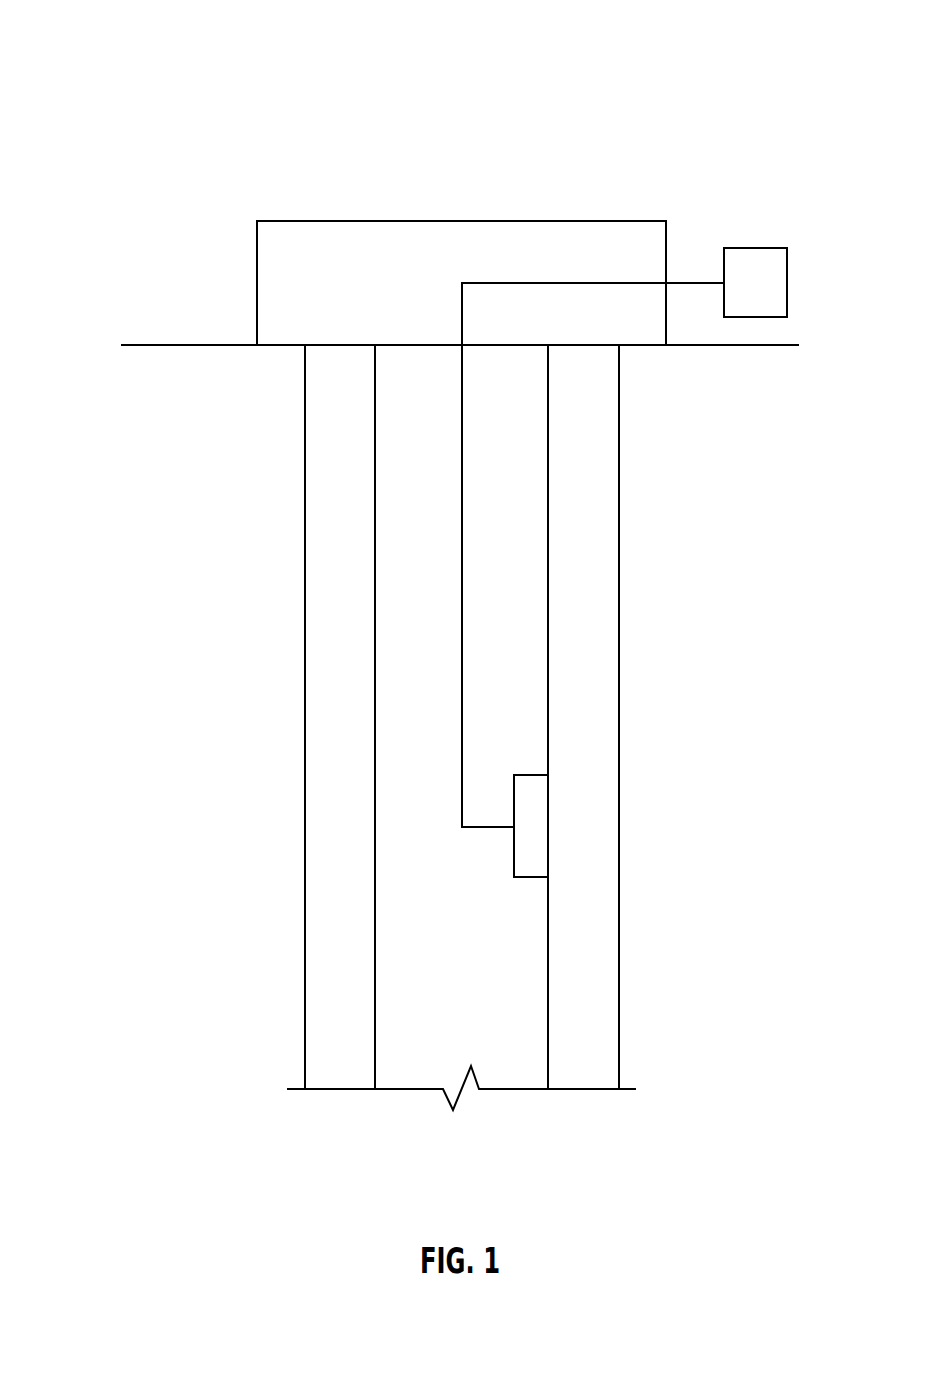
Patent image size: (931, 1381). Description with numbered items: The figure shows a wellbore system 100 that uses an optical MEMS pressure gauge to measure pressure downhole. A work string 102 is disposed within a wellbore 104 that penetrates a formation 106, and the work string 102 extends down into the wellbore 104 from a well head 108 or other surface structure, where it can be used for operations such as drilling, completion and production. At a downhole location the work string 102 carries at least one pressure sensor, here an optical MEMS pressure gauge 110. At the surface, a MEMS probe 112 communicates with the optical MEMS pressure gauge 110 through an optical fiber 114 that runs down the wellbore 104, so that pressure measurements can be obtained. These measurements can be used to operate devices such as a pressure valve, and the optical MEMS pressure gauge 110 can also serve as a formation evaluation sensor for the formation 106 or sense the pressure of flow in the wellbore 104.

The wellbore system 100 is at (110, 34).
The work string 102 is at (375, 887).
The wellbore 104 is at (604, 664).
The formation 106 is at (766, 529).
The well head 108 is at (303, 219).
The optical MEMS pressure gauge 110 is at (539, 815).
The MEMS probe 112 is at (772, 248).
The optical fiber 114 is at (461, 619).